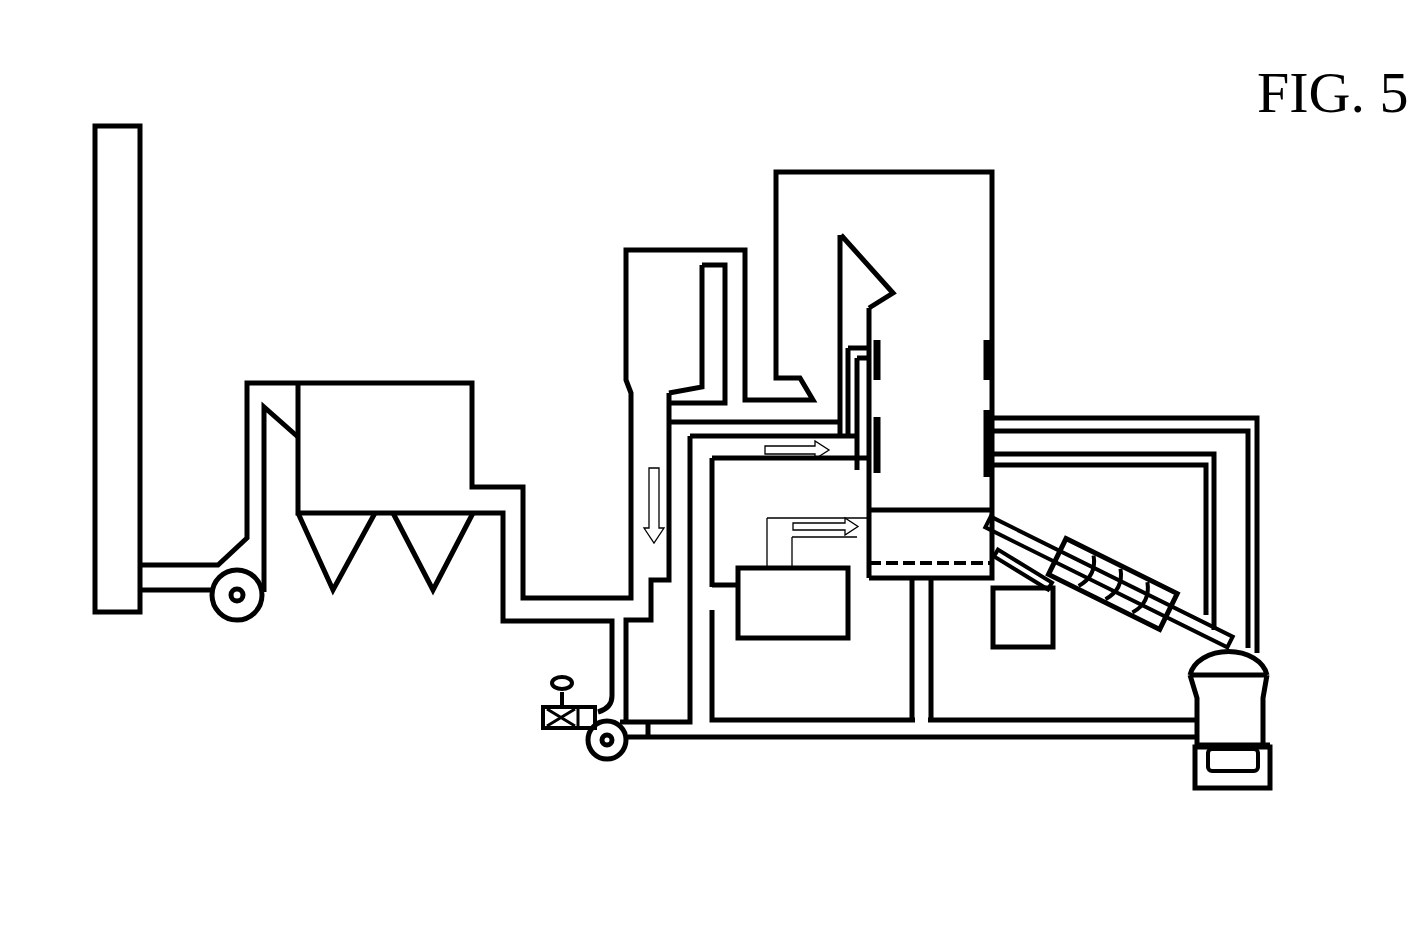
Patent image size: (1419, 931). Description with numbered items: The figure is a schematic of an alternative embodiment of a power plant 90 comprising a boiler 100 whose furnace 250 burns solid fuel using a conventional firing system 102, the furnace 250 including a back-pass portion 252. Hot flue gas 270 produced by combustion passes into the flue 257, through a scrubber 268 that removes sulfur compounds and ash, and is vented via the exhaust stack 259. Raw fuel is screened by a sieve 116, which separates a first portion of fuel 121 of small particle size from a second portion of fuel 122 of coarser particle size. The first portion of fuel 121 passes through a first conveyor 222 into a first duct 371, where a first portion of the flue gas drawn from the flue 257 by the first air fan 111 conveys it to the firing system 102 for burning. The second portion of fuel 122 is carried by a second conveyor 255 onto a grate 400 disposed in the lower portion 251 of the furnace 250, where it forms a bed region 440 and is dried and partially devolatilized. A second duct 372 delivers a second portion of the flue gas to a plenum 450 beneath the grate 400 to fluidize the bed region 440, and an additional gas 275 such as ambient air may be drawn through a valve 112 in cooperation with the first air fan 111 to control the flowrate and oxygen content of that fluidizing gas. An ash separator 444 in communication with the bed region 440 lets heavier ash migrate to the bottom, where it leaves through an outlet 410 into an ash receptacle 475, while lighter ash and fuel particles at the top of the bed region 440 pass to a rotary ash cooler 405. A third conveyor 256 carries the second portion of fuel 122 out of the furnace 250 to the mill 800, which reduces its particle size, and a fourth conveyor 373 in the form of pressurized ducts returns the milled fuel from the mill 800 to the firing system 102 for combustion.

The power plant 90 is at (252, 79).
The boiler 100 is at (733, 150).
The exhaust stack 259 is at (107, 220).
The scrubber 268 is at (680, 296).
The flue 257 is at (652, 450).
The hot flue gas 270 is at (646, 505).
The back-pass portion 252 is at (802, 248).
The furnace 250 is at (950, 334).
The firing system 102 is at (980, 432).
The bed region 440 is at (968, 506).
The grate 400 is at (948, 556).
The ash separator 444 is at (961, 560).
The first portion of fuel 121 is at (800, 450).
The sieve 116 is at (811, 621).
The second conveyor 255 is at (790, 516).
The second portion of fuel 122 is at (830, 536).
The first duct 371 is at (700, 688).
The first conveyor 222 is at (723, 600).
The plenum 450 is at (912, 580).
The second duct 372 is at (922, 660).
The fourth conveyor 373 is at (1200, 507).
The lower portion of furnace 251 is at (1086, 496).
The third conveyor 256 is at (1043, 527).
The ash cooler 405 is at (1110, 557).
The outlet 410 is at (1040, 630).
The ash receptacle 475 is at (1053, 635).
The mill 800 is at (1243, 715).
The first air fan 111 is at (618, 745).
The additional gas 275 is at (500, 731).
The valve 112 is at (545, 713).